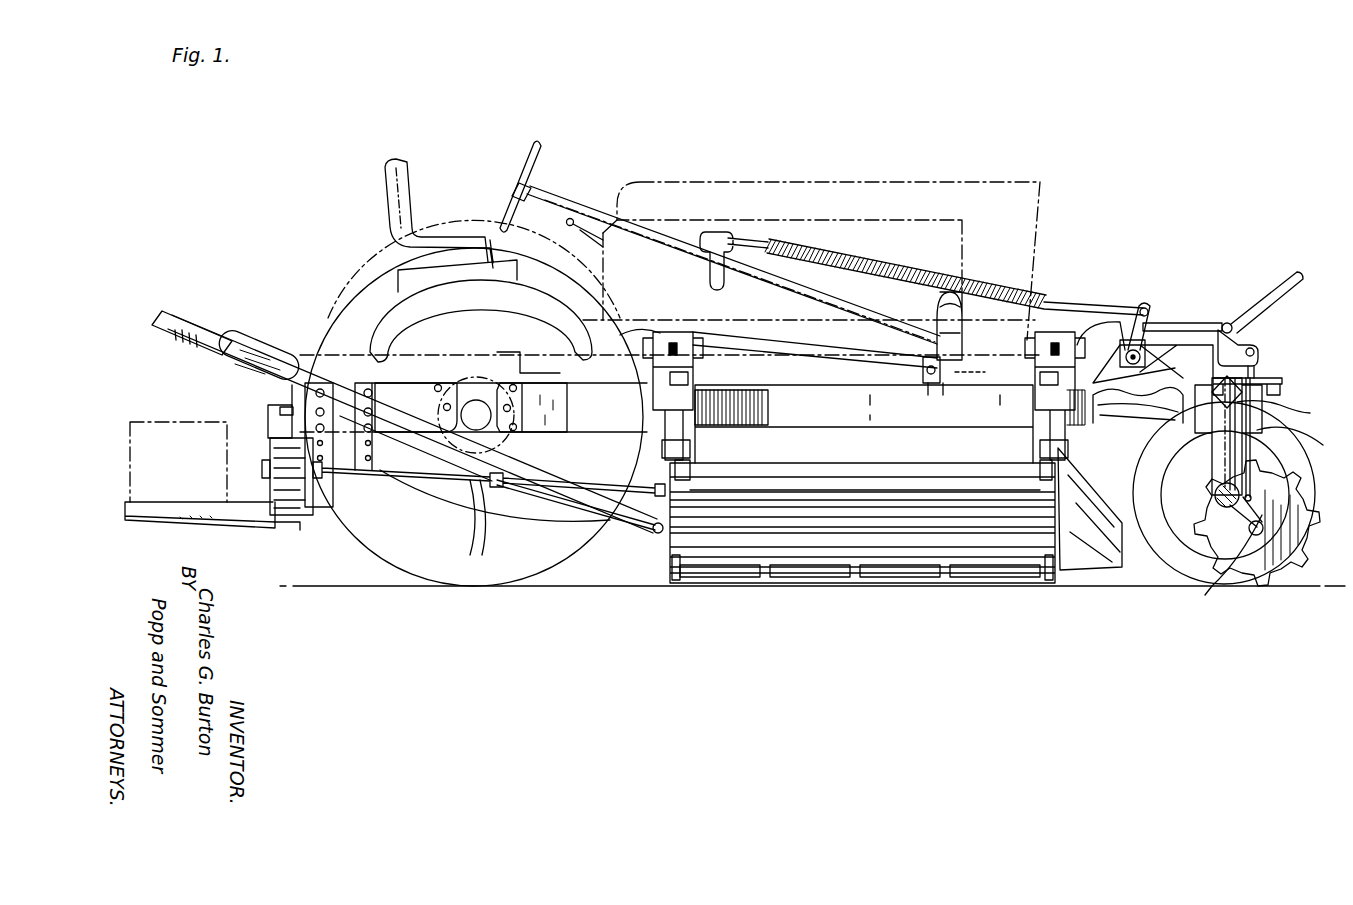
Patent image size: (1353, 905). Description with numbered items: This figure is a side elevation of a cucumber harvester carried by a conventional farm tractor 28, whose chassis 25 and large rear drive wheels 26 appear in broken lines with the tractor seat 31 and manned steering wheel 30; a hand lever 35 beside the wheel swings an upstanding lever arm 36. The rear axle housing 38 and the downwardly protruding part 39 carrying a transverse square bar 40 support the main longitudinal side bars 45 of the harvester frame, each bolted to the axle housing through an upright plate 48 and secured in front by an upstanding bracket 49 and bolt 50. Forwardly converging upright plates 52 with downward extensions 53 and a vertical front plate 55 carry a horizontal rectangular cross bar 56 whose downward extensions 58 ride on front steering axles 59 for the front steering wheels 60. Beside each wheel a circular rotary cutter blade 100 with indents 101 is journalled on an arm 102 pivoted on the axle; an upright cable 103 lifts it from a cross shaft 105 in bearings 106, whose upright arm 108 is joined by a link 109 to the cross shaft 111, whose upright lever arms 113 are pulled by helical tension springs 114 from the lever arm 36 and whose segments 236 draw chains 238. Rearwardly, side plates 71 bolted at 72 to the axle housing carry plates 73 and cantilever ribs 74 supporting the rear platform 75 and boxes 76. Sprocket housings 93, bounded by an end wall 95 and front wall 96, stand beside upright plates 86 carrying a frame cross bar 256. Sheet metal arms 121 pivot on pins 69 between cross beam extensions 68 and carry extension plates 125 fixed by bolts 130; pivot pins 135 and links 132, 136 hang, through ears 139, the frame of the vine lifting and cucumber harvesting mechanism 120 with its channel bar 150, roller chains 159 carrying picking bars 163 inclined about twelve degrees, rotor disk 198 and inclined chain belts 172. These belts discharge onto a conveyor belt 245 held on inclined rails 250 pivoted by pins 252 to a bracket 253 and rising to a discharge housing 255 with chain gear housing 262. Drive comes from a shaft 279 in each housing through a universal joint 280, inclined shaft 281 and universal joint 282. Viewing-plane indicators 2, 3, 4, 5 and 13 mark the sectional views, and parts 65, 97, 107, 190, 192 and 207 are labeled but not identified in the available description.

The section line 13 is at (258, 546).
The section line 5 is at (170, 305).
The section line 4 is at (466, 515).
The section line 2 is at (1308, 372).
The section line 3 is at (1116, 452).
The farm tractor 28 is at (940, 180).
The tractor chassis 25 is at (770, 330).
The tractor seat 31 is at (412, 170).
The rear drive wheels 26 is at (418, 590).
The rear axle housing 38 is at (487, 350).
The upright plate 48 is at (545, 383).
The side plates 71 is at (416, 405).
The bolts 72 is at (452, 404).
The inclined side rails 250 is at (365, 390).
The discharge housing 255 is at (197, 322).
The chain gear housing 262 is at (262, 355).
The frame cross bar 256 is at (280, 410).
The upright plates 86 is at (278, 428).
The rear platform 75 is at (160, 505).
The boxes 76 is at (160, 524).
The outer vertical end wall 95 is at (295, 515).
The horizontal shaft 279 is at (262, 465).
The shaft 97 is at (268, 478).
The sprocket housings 93 is at (258, 488).
The front vertical wall 96 is at (320, 510).
The cantilever bars or ribs 74 is at (290, 525).
The plate 73 is at (345, 485).
The universal joint 280 is at (360, 495).
The pins 252 is at (615, 512).
The endless chain conveyor belt 245 is at (545, 515).
The universal joint 282 is at (600, 525).
The inclined shaft 281 is at (475, 545).
The bracket 253 is at (642, 540).
The deck part 192 is at (630, 576).
The steering wheel 30 is at (538, 145).
The hand lever 35 is at (566, 221).
The lever arm 36 is at (722, 232).
The helical tension spring 114 is at (880, 268).
The frame cross beam extensions 68 is at (690, 330).
The frame pivot pin 69 is at (1025, 345).
The sheet metal arm 121 is at (1078, 345).
The bolt 130 is at (653, 392).
The post 65 is at (1085, 340).
The main longitudinal side bars 45 is at (838, 392).
The extension plates 125 is at (1043, 391).
The pivot pin 135 is at (1048, 420).
The connecting rod or link 136 is at (1060, 432).
The connecting rod or link 132 is at (1060, 450).
The endless roller chains 159 is at (690, 480).
The upstanding ears 139 is at (670, 470).
The member 190 is at (668, 486).
The vine lifting and cucumber harvesting mechanism 120 is at (860, 600).
The cucumber picking bars 163 is at (895, 452).
The sheet metal disk 198 is at (992, 540).
The metal channel bar 150 is at (1048, 505).
The inclined chain belt 172 is at (838, 580).
The chute 207 is at (1108, 582).
The downwardly protruding part 39 is at (921, 370).
The square bar 40 is at (973, 368).
The bolt 50 is at (928, 388).
The upstanding bracket 49 is at (947, 388).
The upright lever arms 113 is at (1143, 306).
The cross shaft 111 is at (1150, 340).
The link 109 is at (1180, 322).
The segments 236 is at (1153, 358).
The front steering axles 59 is at (1214, 495).
The chain 238 is at (1138, 405).
The forwardly converging upright plates 52 is at (1185, 412).
The rectangular downward extensions 53 is at (1210, 425).
The downward extensions 58 is at (1213, 468).
The cross shaft 105 is at (1270, 300).
The upright arm 108 is at (1240, 325).
The rod 107 is at (1262, 350).
The bearings 106 is at (1275, 357).
The horizontal rectangular cross bar 56 is at (1286, 406).
The vertical front plate 55 is at (1299, 445).
The upright cable 103 is at (1245, 458).
The circular rotary cutter blade 100 is at (1243, 583).
The indents 101 is at (1300, 580).
The arm 102 is at (1215, 595).
The front steering wheels 60 is at (1178, 590).